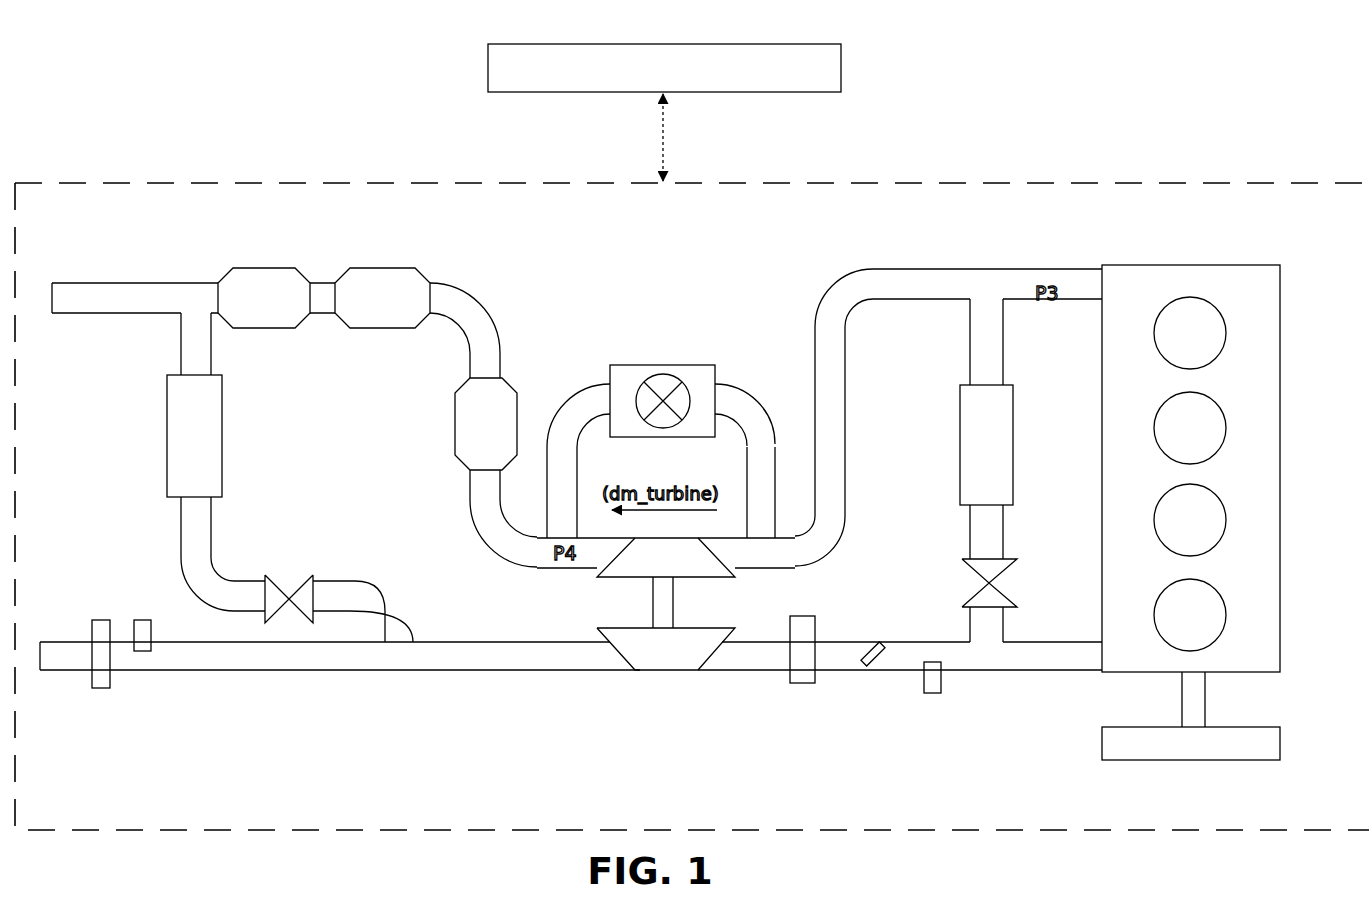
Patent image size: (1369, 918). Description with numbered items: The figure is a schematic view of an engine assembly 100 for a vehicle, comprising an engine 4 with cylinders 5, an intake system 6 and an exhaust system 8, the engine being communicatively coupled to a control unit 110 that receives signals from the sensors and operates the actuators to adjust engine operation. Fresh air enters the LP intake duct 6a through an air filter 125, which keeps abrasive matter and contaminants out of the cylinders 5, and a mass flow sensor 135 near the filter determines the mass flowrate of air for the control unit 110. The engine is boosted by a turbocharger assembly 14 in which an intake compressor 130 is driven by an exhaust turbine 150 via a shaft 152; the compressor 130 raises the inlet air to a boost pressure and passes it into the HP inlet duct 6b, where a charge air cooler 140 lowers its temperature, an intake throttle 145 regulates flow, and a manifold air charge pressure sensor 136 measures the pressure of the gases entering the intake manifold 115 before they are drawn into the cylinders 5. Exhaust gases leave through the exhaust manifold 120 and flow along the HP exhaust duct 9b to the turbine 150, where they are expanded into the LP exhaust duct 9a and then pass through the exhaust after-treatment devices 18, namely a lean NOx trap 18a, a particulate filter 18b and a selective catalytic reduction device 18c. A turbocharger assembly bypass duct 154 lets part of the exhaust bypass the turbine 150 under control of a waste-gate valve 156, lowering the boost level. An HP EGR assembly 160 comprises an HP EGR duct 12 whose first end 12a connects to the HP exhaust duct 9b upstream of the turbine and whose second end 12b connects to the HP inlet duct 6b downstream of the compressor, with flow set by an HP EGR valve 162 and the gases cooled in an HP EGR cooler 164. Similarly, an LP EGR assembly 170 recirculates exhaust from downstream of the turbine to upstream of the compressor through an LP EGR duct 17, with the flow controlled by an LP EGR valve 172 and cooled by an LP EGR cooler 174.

The engine assembly 100 is at (1262, 100).
The control unit 110 is at (664, 112).
The engine 4 is at (1288, 378).
The cylinders 5 is at (1190, 474).
The exhaust manifold 120 is at (1064, 262).
The HP exhaust duct 9b is at (898, 268).
The exhaust system 8 is at (800, 278).
The HP EGR assembly 160 is at (903, 348).
The first end of HP EGR duct 12a is at (968, 300).
The HP EGR cooler 164 is at (965, 432).
The HP EGR duct 12 is at (968, 528).
The HP EGR valve 162 is at (985, 572).
The second end of HP EGR duct 12b is at (968, 640).
The LP intake duct 6a is at (185, 667).
The HP inlet duct 6b is at (1002, 662).
The intake system 6 is at (305, 748).
The air filter 125 is at (103, 688).
The mass flow sensor 135 is at (145, 620).
The charge air cooler 140 is at (803, 684).
The intake throttle 145 is at (872, 660).
The manifold air charge pressure sensor 136 is at (935, 694).
The intake manifold 115 is at (960, 738).
The intake compressor 130 is at (670, 662).
The turbocharger assembly 14 is at (562, 700).
The shaft 152 is at (675, 600).
The exhaust turbine 150 is at (625, 545).
The turbocharger assembly bypass duct 154 is at (745, 385).
The waste-gate valve 156 is at (655, 368).
The LP exhaust duct 9a is at (474, 295).
The lean NOx trap 18a is at (503, 400).
The exhaust after-treatment devices 18 is at (325, 256).
The selective catalytic reduction device 18c is at (250, 281).
The particulate filter 18b is at (378, 282).
The LP EGR duct 17 is at (181, 356).
The LP EGR cooler 174 is at (205, 440).
The LP EGR assembly 170 is at (148, 566).
The LP EGR valve 172 is at (312, 572).